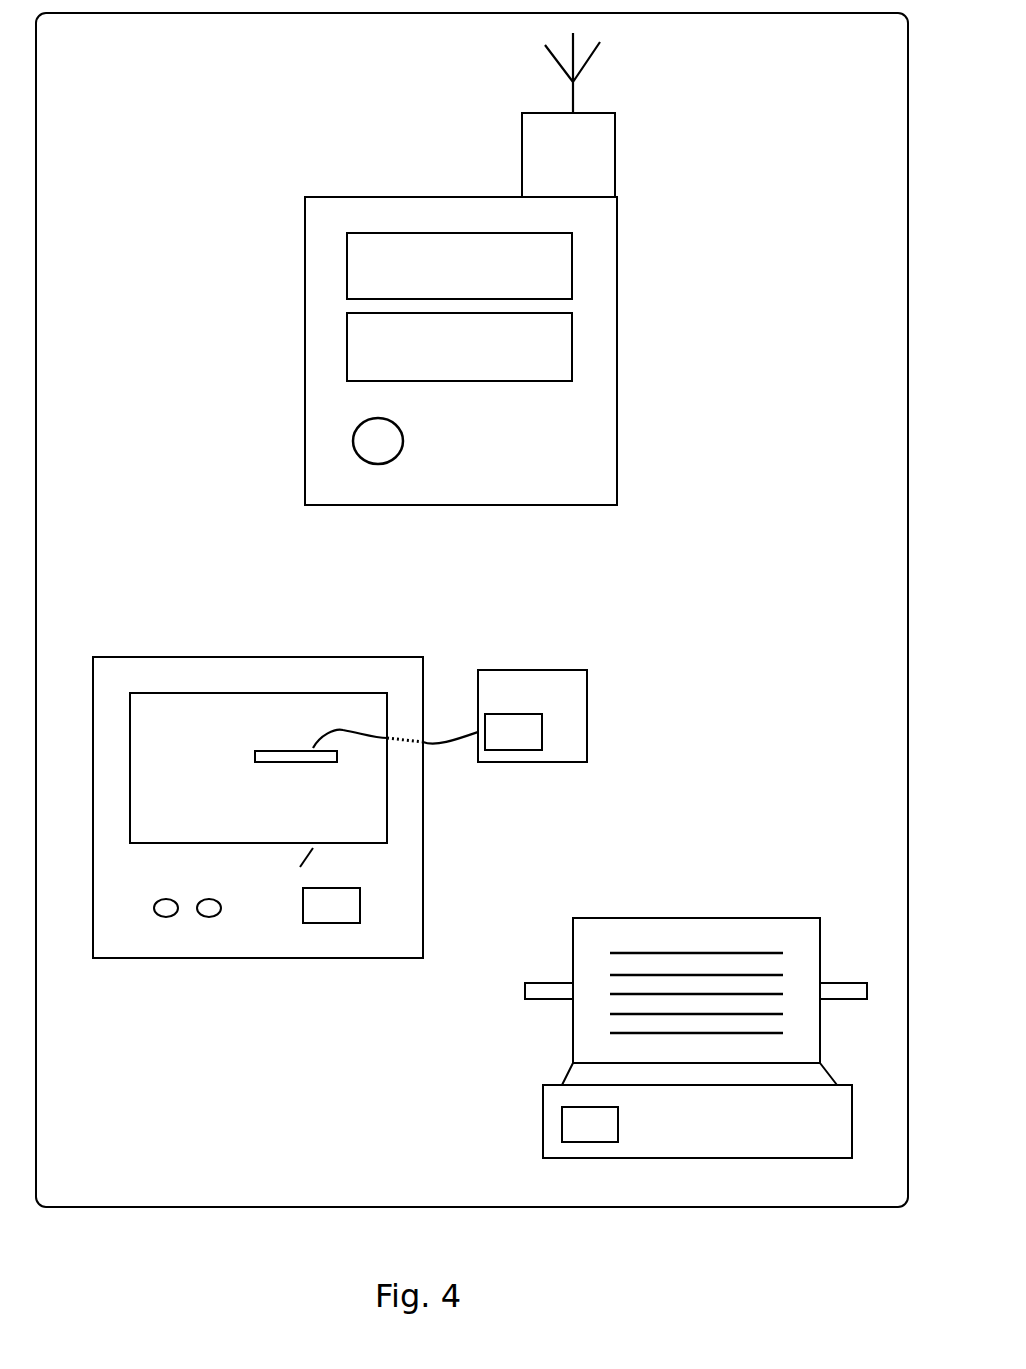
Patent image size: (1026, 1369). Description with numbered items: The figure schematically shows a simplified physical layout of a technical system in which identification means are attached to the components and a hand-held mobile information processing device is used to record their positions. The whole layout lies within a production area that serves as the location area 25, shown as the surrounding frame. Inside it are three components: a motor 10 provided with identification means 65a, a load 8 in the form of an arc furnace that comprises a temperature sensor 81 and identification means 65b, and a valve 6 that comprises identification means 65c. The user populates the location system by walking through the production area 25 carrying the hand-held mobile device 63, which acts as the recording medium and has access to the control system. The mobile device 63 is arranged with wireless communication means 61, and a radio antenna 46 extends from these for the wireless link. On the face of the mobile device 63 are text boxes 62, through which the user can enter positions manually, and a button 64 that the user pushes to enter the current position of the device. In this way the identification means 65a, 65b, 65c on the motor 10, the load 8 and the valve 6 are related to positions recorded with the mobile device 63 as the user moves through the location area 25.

The location area 25 is at (132, 18).
The radio antenna 46 is at (588, 60).
The wireless communication means 61 is at (600, 157).
The text boxes 62 is at (552, 290).
The hand-held mobile device 63 is at (597, 400).
The button 64 is at (370, 442).
The temperature sensor 81 is at (293, 755).
The load 8 is at (405, 888).
The identification means 65b is at (337, 910).
The valve 6 is at (577, 727).
The identification means 65c is at (520, 738).
The motor 10 is at (673, 928).
The identification means 65a is at (588, 1125).